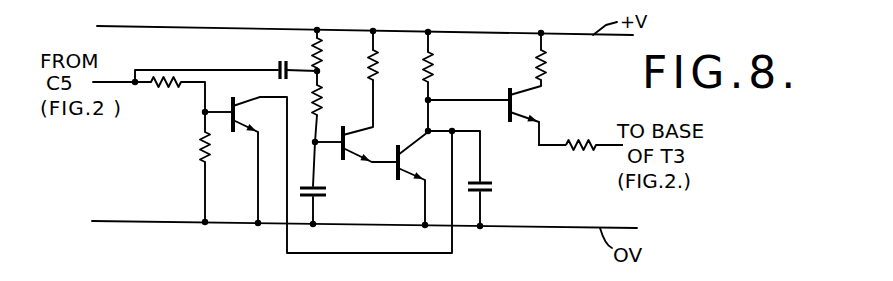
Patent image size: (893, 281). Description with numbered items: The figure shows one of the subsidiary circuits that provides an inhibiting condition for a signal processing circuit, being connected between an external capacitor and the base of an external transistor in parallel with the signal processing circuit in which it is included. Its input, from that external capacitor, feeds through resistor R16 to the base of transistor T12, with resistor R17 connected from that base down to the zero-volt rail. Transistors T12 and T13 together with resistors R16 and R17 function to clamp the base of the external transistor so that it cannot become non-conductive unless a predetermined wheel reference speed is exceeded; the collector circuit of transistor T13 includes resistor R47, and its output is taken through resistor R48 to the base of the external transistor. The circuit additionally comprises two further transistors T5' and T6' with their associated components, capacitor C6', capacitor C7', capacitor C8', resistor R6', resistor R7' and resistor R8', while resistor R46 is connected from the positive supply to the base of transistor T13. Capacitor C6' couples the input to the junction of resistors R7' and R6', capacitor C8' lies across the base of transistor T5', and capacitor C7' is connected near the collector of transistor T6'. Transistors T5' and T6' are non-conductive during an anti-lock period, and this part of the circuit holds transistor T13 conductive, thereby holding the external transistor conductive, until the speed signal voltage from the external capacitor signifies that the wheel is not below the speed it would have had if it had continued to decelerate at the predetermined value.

The resistor R16 is at (176, 96).
The resistor R17 is at (186, 139).
The transistor T12 is at (241, 109).
The capacitor C6' is at (271, 59).
The resistor R7' is at (335, 55).
The resistor R6' is at (335, 104).
The resistor R8' is at (391, 66).
The resistor R46 is at (449, 68).
The transistor T5' is at (361, 138).
The transistor T6' is at (421, 156).
The capacitor C8' is at (334, 203).
The capacitor C7' is at (498, 181).
The resistor R47 is at (561, 65).
The transistor T13 is at (522, 102).
The resistor R48 is at (592, 135).